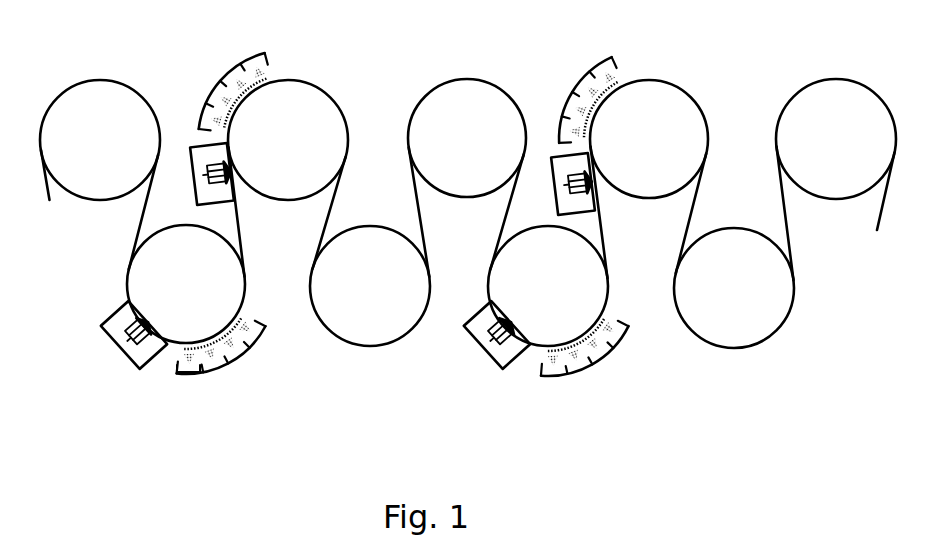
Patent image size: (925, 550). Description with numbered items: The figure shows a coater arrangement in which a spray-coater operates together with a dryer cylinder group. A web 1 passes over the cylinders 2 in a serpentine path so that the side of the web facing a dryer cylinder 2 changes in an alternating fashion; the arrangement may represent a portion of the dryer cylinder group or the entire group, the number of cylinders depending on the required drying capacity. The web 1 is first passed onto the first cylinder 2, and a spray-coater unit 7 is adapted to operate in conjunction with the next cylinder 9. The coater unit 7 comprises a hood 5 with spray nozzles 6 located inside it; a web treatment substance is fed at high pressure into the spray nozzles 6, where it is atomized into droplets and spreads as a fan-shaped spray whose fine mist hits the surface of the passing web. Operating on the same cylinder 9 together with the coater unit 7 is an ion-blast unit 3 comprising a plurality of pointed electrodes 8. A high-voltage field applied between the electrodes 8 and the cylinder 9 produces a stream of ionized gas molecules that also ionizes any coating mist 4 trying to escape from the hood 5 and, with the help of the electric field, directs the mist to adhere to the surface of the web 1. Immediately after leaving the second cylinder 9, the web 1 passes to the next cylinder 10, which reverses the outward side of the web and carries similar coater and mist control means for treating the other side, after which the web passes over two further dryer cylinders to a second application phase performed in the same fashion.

The web 1 is at (47, 198).
The cylinder 2 is at (107, 100).
The ion-blast unit 3 is at (243, 64).
The coating mist 4 is at (270, 72).
The hood 5 is at (192, 162).
The spray nozzles 6 is at (233, 186).
The spray-coater unit 7 is at (103, 330).
The pointed electrodes 8 is at (187, 372).
The cylinder 9 is at (152, 283).
The cylinder 10 is at (320, 108).